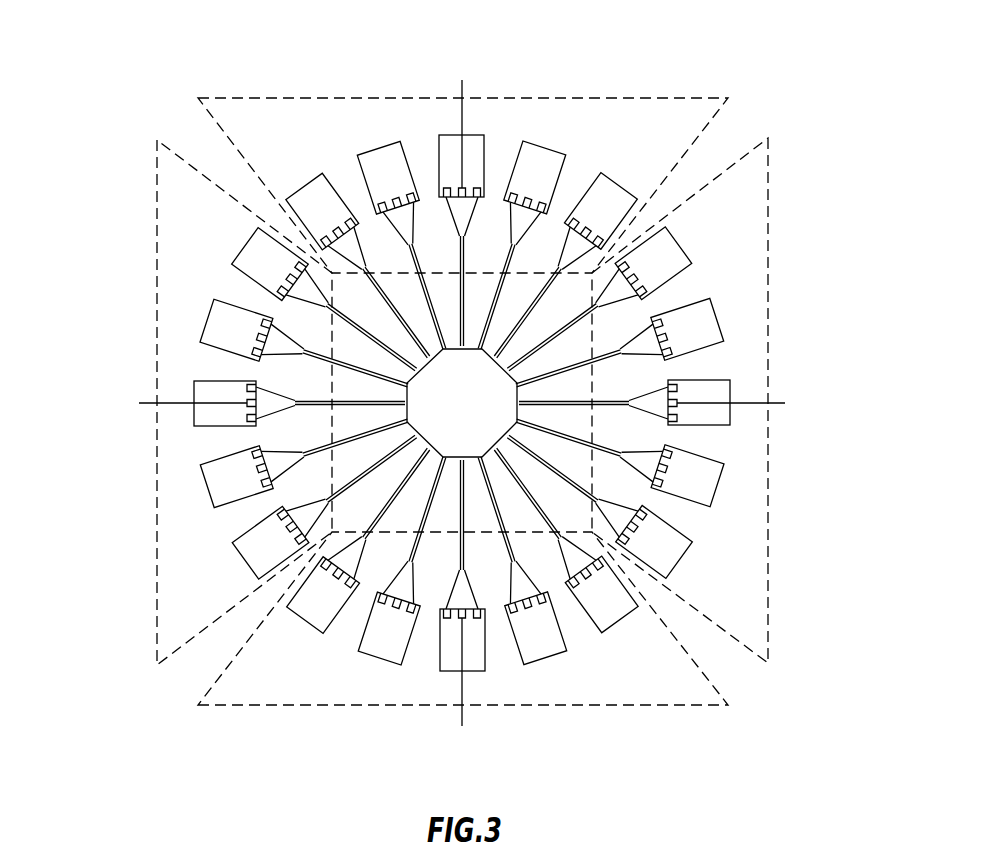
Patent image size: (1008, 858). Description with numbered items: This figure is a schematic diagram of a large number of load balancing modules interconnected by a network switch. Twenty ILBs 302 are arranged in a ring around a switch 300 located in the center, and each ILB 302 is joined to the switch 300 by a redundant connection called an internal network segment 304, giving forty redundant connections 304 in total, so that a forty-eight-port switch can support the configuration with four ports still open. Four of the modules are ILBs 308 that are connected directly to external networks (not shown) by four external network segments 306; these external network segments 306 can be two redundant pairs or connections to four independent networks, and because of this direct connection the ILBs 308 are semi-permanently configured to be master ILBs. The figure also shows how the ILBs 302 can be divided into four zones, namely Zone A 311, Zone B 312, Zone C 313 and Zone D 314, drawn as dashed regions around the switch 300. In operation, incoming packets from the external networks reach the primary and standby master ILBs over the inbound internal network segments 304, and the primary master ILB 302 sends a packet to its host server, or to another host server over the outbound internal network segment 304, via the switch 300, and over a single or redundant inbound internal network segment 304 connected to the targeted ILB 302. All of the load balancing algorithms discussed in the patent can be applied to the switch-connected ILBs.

The switch 300 is at (482, 440).
The ILB 302 is at (285, 196).
The internal network segment 304 is at (513, 346).
The external network segment 306 is at (460, 85).
The master ILB 308 is at (440, 133).
The Zone A 311 is at (583, 98).
The Zone B 312 is at (768, 190).
The Zone C 313 is at (317, 707).
The Zone D 314 is at (156, 205).